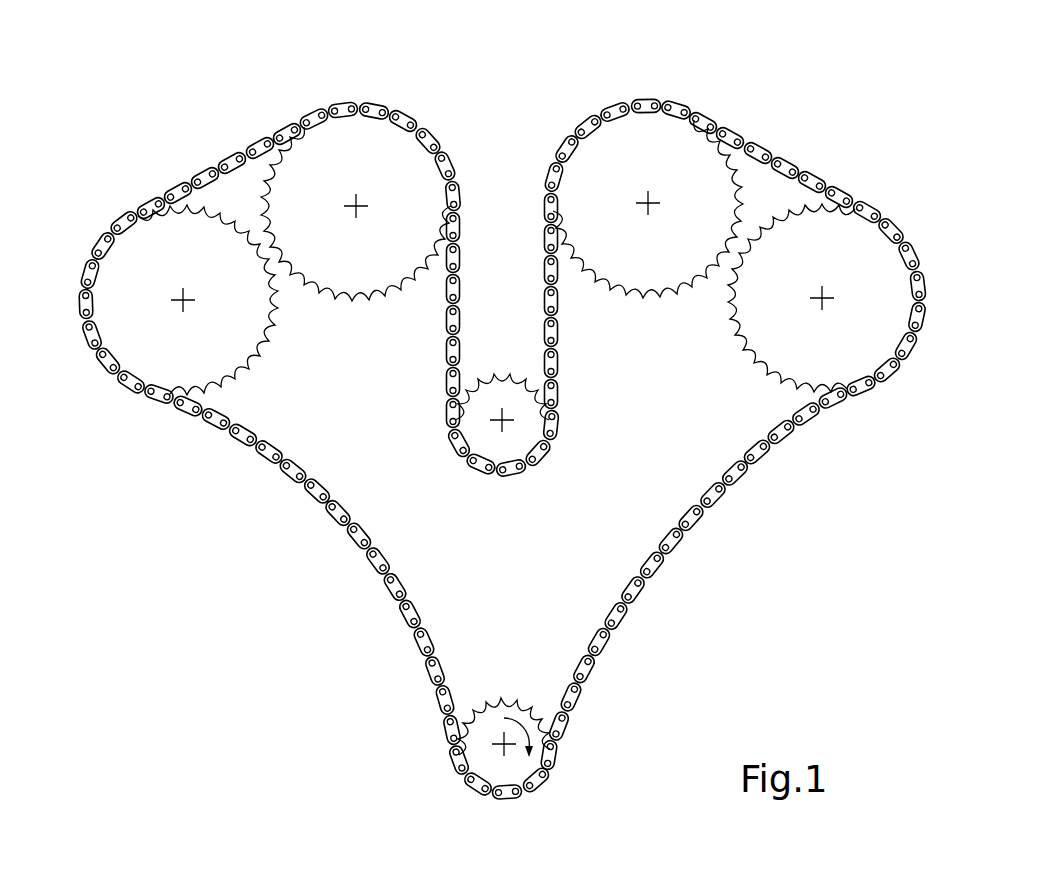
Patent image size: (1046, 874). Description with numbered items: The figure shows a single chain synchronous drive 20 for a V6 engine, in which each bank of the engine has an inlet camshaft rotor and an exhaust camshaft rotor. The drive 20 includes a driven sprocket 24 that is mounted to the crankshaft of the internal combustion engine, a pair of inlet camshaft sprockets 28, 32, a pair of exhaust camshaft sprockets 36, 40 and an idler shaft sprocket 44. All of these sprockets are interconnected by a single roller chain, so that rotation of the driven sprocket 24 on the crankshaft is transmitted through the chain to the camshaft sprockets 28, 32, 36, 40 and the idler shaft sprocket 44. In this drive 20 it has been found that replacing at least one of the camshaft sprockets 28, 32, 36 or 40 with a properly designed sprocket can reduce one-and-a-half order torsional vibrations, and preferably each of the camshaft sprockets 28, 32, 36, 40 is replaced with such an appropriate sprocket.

The synchronous drive 20 is at (140, 146).
The driven sprocket 24 is at (480, 722).
The inlet camshaft sprocket 28 is at (343, 141).
The inlet camshaft sprocket 32 is at (650, 160).
The exhaust camshaft sprocket 36 is at (140, 282).
The exhaust camshaft sprocket 40 is at (860, 263).
The idler shaft sprocket 44 is at (527, 422).